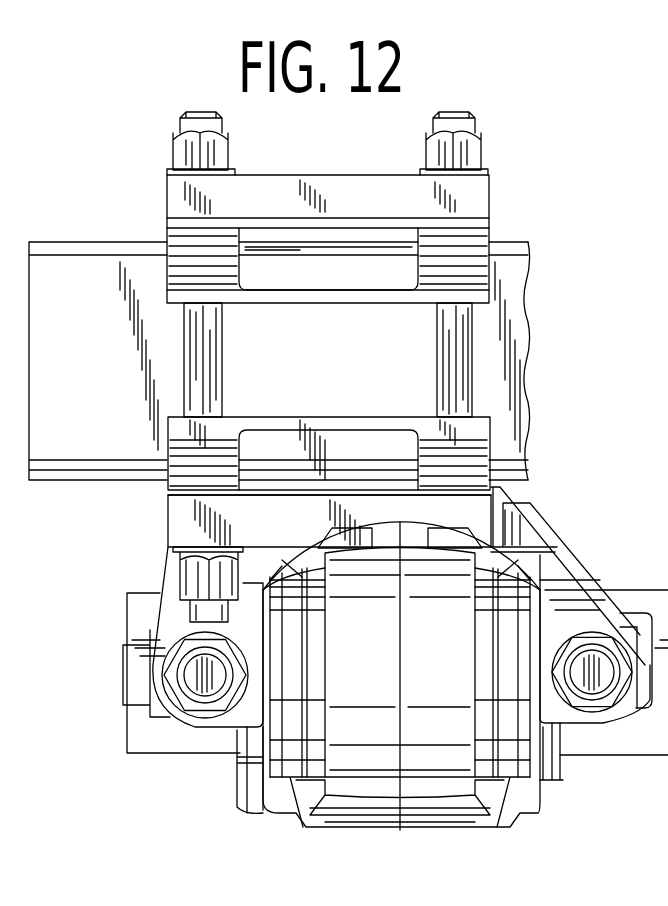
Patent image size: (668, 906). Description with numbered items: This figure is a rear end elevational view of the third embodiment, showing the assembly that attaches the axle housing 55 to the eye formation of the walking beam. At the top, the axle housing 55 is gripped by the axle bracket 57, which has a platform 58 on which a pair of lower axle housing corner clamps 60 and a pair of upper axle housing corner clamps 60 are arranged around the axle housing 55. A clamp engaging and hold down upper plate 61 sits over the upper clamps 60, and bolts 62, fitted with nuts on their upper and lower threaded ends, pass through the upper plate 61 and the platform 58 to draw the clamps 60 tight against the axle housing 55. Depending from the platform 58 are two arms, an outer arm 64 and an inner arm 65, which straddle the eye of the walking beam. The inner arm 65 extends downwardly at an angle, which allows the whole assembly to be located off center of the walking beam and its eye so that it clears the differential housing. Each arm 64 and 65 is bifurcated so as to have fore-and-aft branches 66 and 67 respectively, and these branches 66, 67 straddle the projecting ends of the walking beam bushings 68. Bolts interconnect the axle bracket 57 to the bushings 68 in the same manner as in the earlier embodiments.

The axle housing 55 is at (112, 243).
The axle bracket 57 is at (297, 533).
The platform 58 is at (170, 520).
The axle housing corner clamps 60 is at (490, 230).
The clamp engaging and hold down upper plate 61 is at (490, 194).
The bolts 62 is at (227, 377).
The arm 64 is at (165, 565).
The inner arm 65 is at (582, 571).
The fore-and-aft branches 66 is at (226, 720).
The fore-and-aft branches 67 is at (606, 720).
The walking beam bushings 68 is at (642, 589).